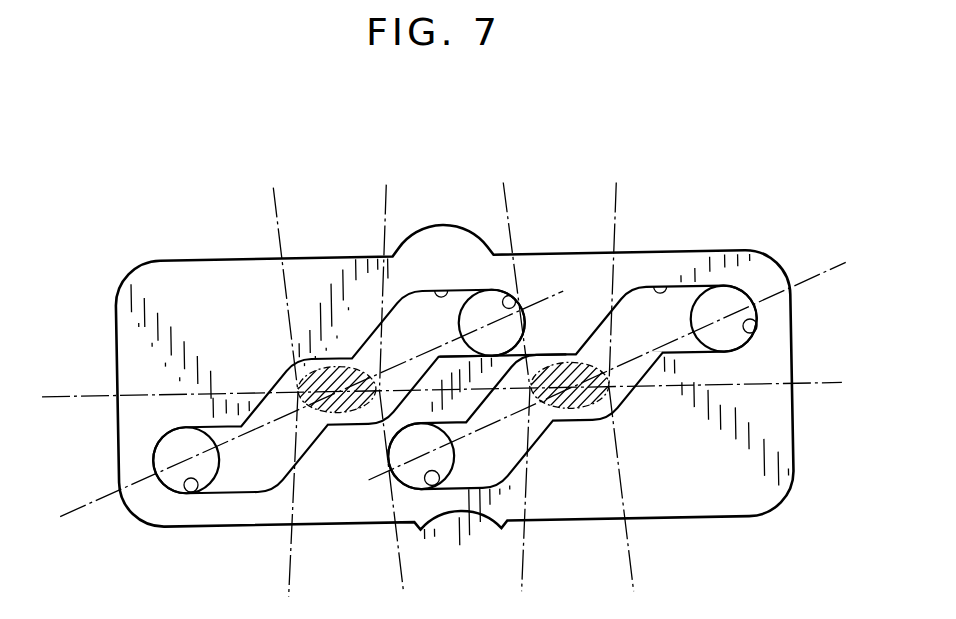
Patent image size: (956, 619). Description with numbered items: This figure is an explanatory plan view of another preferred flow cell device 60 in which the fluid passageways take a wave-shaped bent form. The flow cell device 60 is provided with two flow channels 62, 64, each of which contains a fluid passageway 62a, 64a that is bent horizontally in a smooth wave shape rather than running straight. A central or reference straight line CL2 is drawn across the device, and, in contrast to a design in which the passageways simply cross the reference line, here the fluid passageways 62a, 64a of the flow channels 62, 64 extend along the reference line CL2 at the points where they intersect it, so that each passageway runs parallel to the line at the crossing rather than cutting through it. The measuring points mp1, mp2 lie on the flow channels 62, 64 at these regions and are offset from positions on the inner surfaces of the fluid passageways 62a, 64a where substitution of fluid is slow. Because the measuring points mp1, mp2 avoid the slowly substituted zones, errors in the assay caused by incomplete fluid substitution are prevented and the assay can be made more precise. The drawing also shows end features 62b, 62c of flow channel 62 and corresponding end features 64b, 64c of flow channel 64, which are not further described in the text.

The flow cell device 60 is at (573, 198).
The flow channel 62 is at (254, 363).
The fluid passageway 62a is at (442, 290).
The first groove lower end hole 62b is at (190, 492).
The first groove upper end hole 62c is at (515, 298).
The flow channel 64 is at (652, 406).
The fluid passageway 64a is at (663, 288).
The second groove lower end hole 64b is at (429, 485).
The second groove upper end hole 64c is at (757, 327).
The measuring point mp1 is at (337, 414).
The measuring point mp2 is at (572, 408).
The reference line CL2 is at (73, 396).